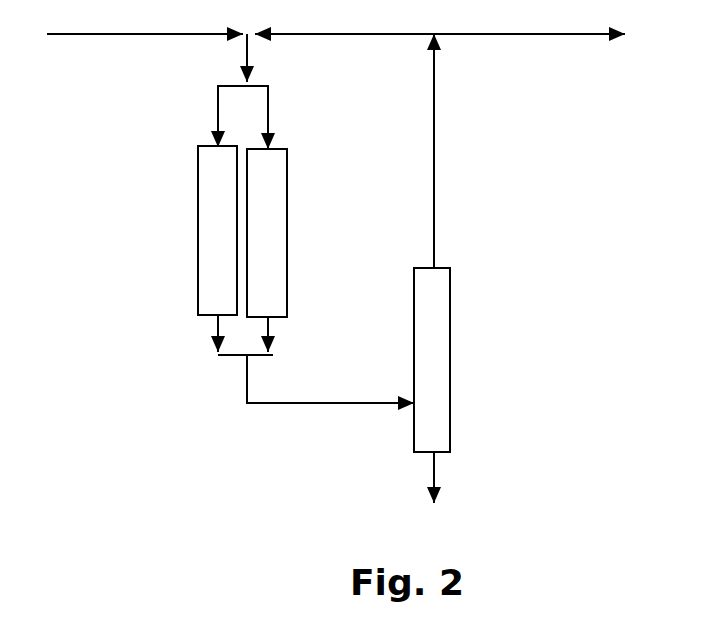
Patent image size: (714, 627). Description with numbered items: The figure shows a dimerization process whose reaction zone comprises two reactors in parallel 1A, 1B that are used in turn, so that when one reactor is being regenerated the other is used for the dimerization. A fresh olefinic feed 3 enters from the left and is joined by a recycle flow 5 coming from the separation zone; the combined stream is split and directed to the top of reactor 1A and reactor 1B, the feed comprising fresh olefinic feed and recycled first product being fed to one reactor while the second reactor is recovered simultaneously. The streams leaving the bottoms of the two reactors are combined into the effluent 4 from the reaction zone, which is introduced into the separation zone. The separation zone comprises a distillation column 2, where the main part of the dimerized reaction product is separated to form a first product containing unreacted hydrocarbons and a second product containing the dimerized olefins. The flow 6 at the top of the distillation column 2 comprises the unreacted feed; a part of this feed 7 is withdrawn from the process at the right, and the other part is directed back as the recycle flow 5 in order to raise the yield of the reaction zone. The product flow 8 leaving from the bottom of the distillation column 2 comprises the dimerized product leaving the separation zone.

The reactor 1A is at (217, 230).
The reactor 1B is at (267, 233).
The distillation column 2 is at (432, 360).
The feed 3 is at (145, 51).
The effluent 4 is at (330, 379).
The recycle flow 5 is at (344, 50).
The top flow 6 is at (459, 151).
The withdrawn feed 7 is at (529, 63).
The product flow 8 is at (460, 477).